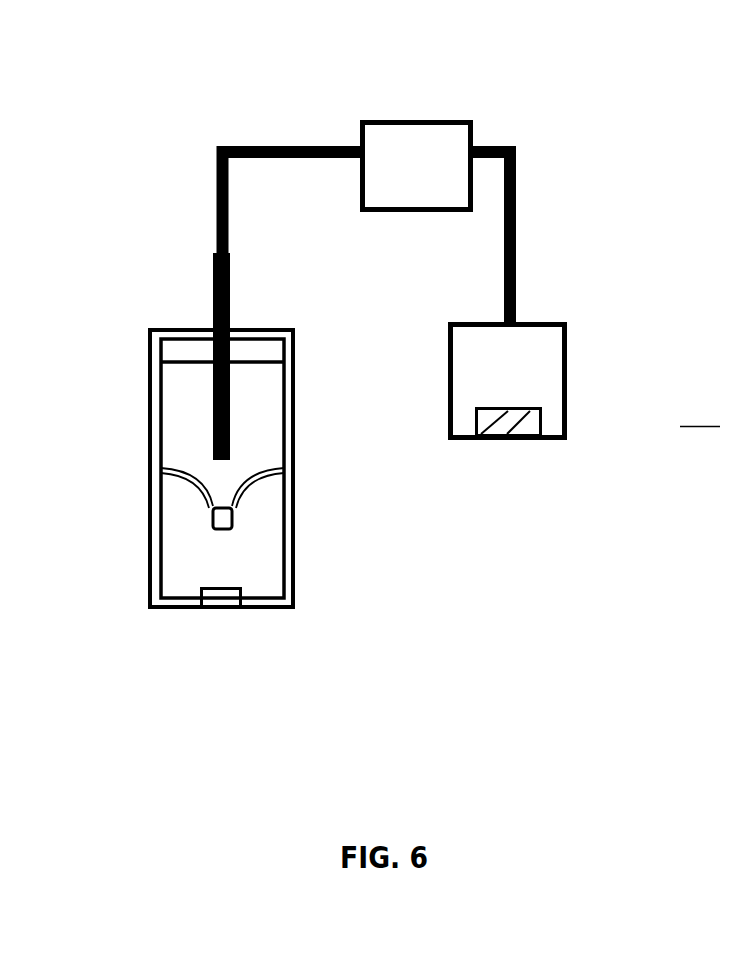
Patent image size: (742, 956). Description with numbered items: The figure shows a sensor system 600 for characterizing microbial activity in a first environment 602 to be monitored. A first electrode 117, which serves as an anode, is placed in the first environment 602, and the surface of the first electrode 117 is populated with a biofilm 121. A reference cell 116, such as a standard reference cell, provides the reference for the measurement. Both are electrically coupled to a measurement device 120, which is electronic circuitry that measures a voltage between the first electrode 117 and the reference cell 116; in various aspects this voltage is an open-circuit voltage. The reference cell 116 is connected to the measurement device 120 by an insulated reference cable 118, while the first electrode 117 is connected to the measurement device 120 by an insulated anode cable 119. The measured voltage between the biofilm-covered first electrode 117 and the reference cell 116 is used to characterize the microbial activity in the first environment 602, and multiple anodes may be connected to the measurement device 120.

The sensor system 600 is at (565, 54).
The first environment 602 is at (701, 415).
The reference cell 116 is at (148, 513).
The first electrode 117 is at (567, 400).
The insulated reference cable 118 is at (215, 222).
The insulated anode cable 119 is at (516, 280).
The measurement device 120 is at (395, 118).
The biofilm 121 is at (512, 437).